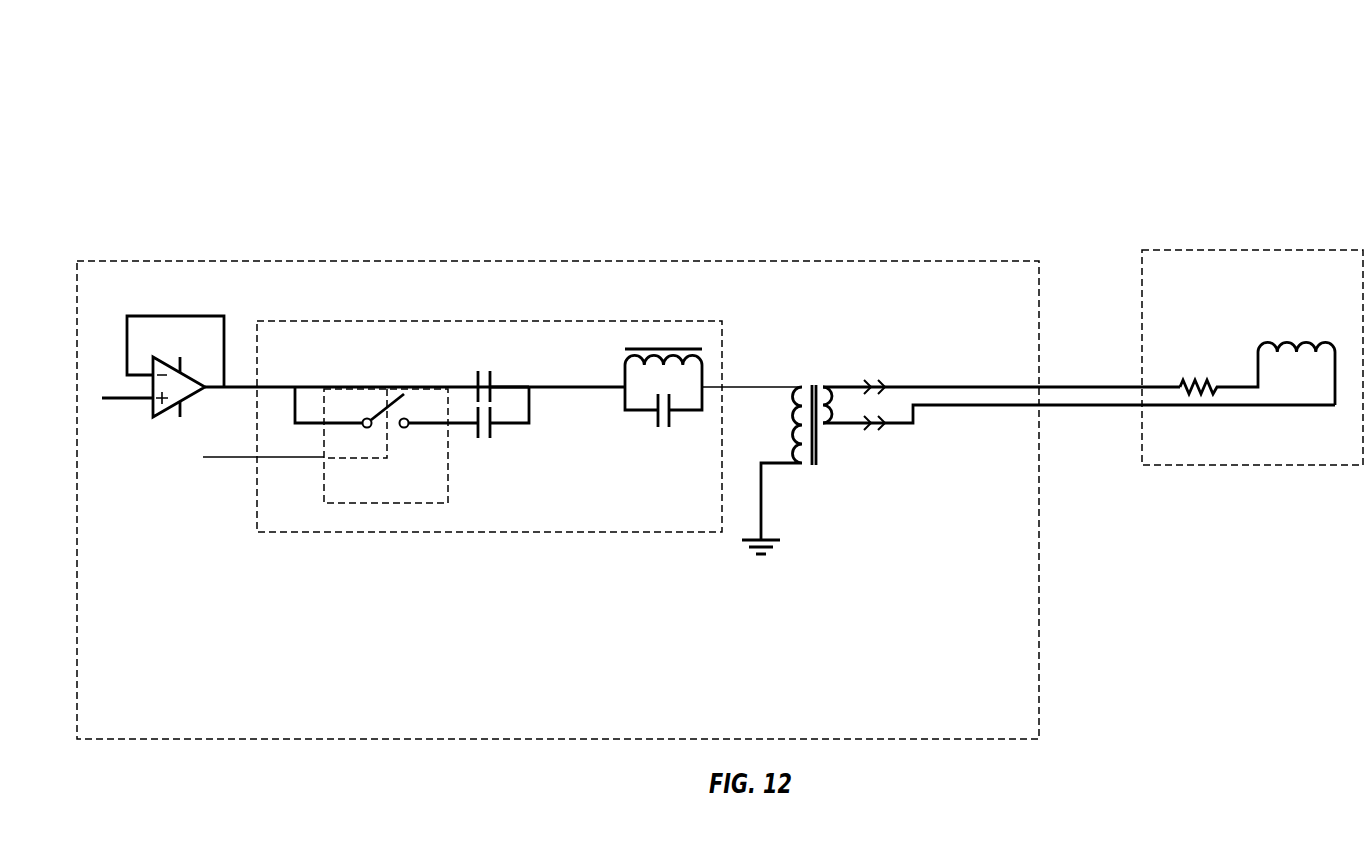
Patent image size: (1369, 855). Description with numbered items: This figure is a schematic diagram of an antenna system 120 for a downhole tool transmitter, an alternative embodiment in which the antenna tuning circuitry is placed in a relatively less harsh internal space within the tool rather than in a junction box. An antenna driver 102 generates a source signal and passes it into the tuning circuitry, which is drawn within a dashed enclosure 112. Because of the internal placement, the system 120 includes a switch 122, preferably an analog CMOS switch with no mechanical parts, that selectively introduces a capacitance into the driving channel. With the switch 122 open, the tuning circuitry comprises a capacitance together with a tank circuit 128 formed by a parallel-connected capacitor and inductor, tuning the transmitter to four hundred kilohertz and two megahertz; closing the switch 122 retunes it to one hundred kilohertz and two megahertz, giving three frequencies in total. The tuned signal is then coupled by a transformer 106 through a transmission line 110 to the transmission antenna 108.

The antenna system 120 is at (166, 156).
The transmitter 112 is at (142, 258).
The antenna driver 102 is at (153, 406).
The switch 122 is at (449, 465).
The tank circuit 128 is at (684, 416).
The transformer 106 is at (822, 443).
The transmission line 110 is at (1100, 407).
The transmission antenna 108 is at (1207, 245).